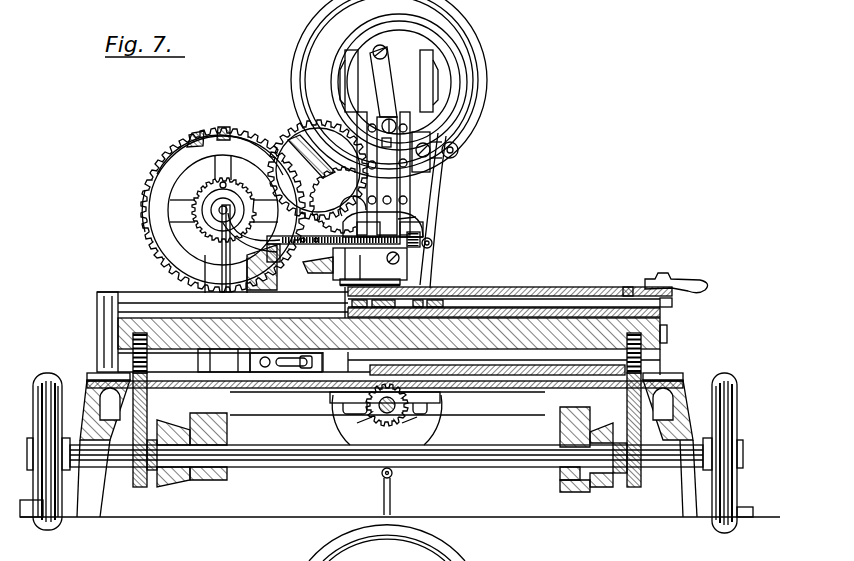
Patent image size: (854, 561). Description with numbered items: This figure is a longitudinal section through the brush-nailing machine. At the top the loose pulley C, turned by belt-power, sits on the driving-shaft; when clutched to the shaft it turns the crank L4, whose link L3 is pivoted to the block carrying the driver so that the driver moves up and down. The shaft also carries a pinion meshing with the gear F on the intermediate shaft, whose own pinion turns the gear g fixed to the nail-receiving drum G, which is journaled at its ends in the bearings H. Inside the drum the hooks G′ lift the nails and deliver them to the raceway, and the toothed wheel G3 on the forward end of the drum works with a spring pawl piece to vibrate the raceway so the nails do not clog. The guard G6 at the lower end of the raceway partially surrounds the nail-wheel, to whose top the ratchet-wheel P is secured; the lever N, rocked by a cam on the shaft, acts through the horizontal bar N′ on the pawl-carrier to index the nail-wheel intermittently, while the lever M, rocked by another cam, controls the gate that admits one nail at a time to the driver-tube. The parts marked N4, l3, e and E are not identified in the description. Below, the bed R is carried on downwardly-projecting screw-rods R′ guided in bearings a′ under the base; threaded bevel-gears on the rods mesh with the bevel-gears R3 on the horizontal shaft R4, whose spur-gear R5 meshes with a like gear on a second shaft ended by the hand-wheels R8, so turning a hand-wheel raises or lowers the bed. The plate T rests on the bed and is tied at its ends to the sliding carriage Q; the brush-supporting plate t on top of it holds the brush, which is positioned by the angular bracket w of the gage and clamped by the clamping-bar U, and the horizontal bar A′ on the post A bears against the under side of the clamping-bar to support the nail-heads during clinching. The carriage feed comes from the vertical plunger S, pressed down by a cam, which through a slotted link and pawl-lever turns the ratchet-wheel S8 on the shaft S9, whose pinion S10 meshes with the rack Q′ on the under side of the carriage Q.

The pulley C is at (312, 39).
The link L3 is at (383, 141).
The crank L4 is at (388, 50).
The lever N is at (432, 121).
The horizontal bar N′ is at (417, 223).
The loop N4 is at (353, 199).
The lever M is at (422, 231).
The ratchet-wheel P is at (333, 235).
The guard G6 is at (355, 266).
The threaded stub l3 is at (434, 252).
The gear F is at (293, 130).
The nail-receiving drum G is at (223, 210).
The gear g is at (143, 216).
The toothed wheel G3 is at (247, 175).
The hooks G′ is at (197, 133).
The bearings H is at (226, 249).
The horizontal metal bar A′ is at (153, 292).
The post A is at (105, 315).
The clamping plate U is at (508, 289).
The brush-supporting plate t is at (672, 304).
The plate T is at (662, 313).
The angular bracket w is at (443, 295).
The bed R is at (392, 335).
The carriage Q is at (502, 373).
The toothed rack Q′ is at (491, 388).
The hand-wheels R8 is at (36, 408).
The horizontal shaft R4 is at (316, 465).
The screw-rods R′ is at (141, 492).
The bearings a′ is at (152, 474).
The bevel-gear R3 is at (182, 480).
The spur-gear R5 is at (524, 485).
The vertical plunger S is at (330, 432).
The pinion S10 is at (387, 405).
The shaft S9 is at (362, 429).
The ratchet-wheel S8 is at (411, 430).
The pin e is at (394, 475).
The rod E is at (391, 503).